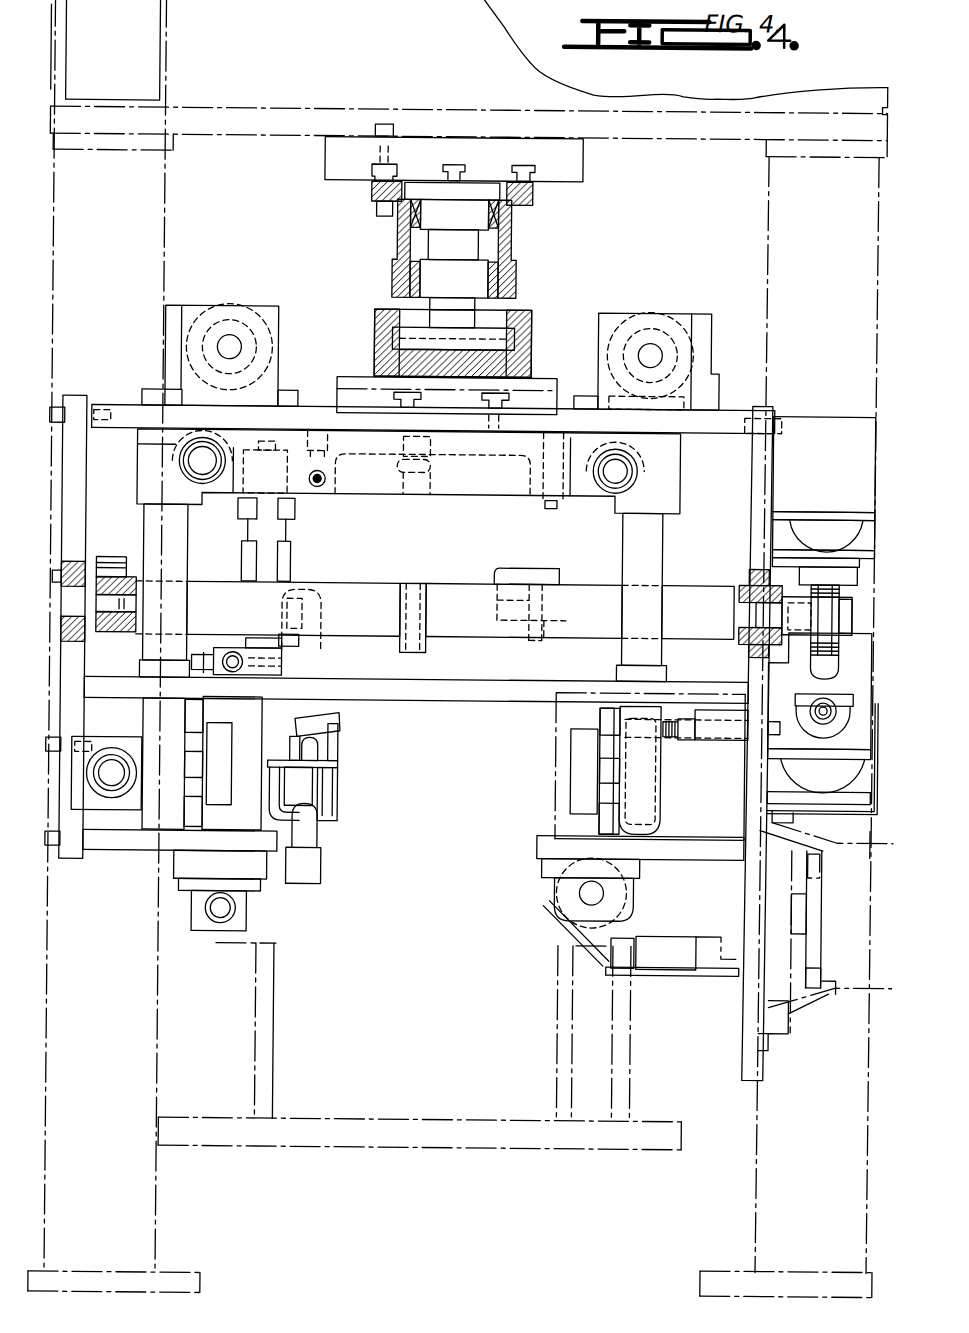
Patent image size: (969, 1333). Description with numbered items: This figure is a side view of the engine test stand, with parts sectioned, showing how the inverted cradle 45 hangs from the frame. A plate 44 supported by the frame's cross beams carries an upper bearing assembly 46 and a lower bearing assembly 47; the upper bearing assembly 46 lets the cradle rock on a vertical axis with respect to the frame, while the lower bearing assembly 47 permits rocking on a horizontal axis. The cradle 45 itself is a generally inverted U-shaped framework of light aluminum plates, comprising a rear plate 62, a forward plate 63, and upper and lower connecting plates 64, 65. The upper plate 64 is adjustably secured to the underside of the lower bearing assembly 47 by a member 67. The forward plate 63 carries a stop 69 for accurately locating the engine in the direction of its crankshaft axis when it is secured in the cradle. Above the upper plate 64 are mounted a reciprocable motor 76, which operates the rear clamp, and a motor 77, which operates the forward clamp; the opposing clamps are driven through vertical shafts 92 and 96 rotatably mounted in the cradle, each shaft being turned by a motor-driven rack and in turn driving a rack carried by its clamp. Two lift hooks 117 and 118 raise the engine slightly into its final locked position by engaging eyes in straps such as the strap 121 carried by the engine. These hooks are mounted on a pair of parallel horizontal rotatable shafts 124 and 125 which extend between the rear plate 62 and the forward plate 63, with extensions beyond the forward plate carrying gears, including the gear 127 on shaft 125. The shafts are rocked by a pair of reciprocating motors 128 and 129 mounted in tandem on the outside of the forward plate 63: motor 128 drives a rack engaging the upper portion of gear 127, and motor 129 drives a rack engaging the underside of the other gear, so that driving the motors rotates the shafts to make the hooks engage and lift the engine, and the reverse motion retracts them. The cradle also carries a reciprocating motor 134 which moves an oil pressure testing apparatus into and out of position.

The plate 44 is at (572, 166).
The inverted cradle 45 is at (123, 381).
The upper bearing assembly 46 is at (505, 229).
The lower bearing assembly 47 is at (512, 300).
The rear plate 62 is at (78, 397).
The forward plate 63 is at (770, 409).
The upper connecting plate 64 is at (522, 420).
The lower connecting plate 65 is at (465, 701).
The member 67 is at (353, 388).
The stop 69 is at (683, 733).
The reciprocable motor 76 is at (239, 313).
The motor 77 is at (660, 320).
The vertical shaft 92 is at (173, 543).
The vertical shaft 96 is at (662, 540).
The lift hook 117 is at (540, 637).
The lift hook 118 is at (293, 640).
The strap 121 is at (311, 592).
The horizontal rotatable shaft 124 is at (525, 530).
The horizontal rotatable shaft 125 is at (377, 604).
The gear 127 is at (842, 591).
The reciprocating motor 128 is at (855, 528).
The reciprocating motor 129 is at (845, 778).
The reciprocating motor 134 is at (276, 536).